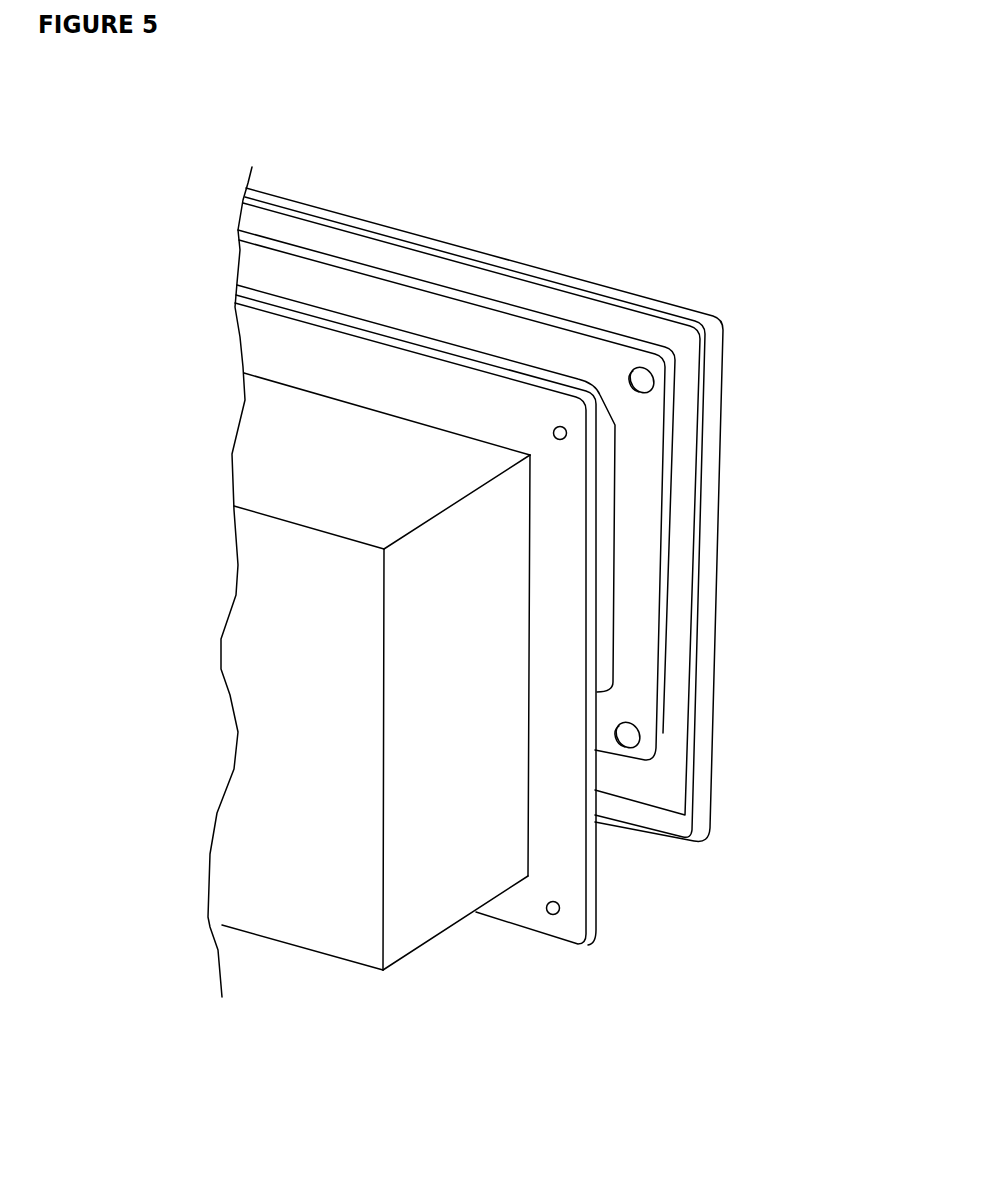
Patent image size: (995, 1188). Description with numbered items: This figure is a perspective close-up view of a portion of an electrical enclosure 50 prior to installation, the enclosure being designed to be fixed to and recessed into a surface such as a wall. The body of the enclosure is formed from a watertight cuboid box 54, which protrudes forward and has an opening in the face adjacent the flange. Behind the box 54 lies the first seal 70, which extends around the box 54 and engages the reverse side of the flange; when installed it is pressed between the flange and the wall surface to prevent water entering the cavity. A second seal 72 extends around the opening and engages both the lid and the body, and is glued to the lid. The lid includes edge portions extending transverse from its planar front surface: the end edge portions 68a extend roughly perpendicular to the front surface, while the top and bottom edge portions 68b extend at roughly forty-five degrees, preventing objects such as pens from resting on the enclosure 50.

The electrical enclosure 50 is at (466, 976).
The box 54 is at (248, 471).
The first seal 70 is at (543, 557).
The second seal 72 is at (637, 433).
The end edge portions 68a is at (705, 631).
The top and bottom edge portions 68b is at (387, 230).